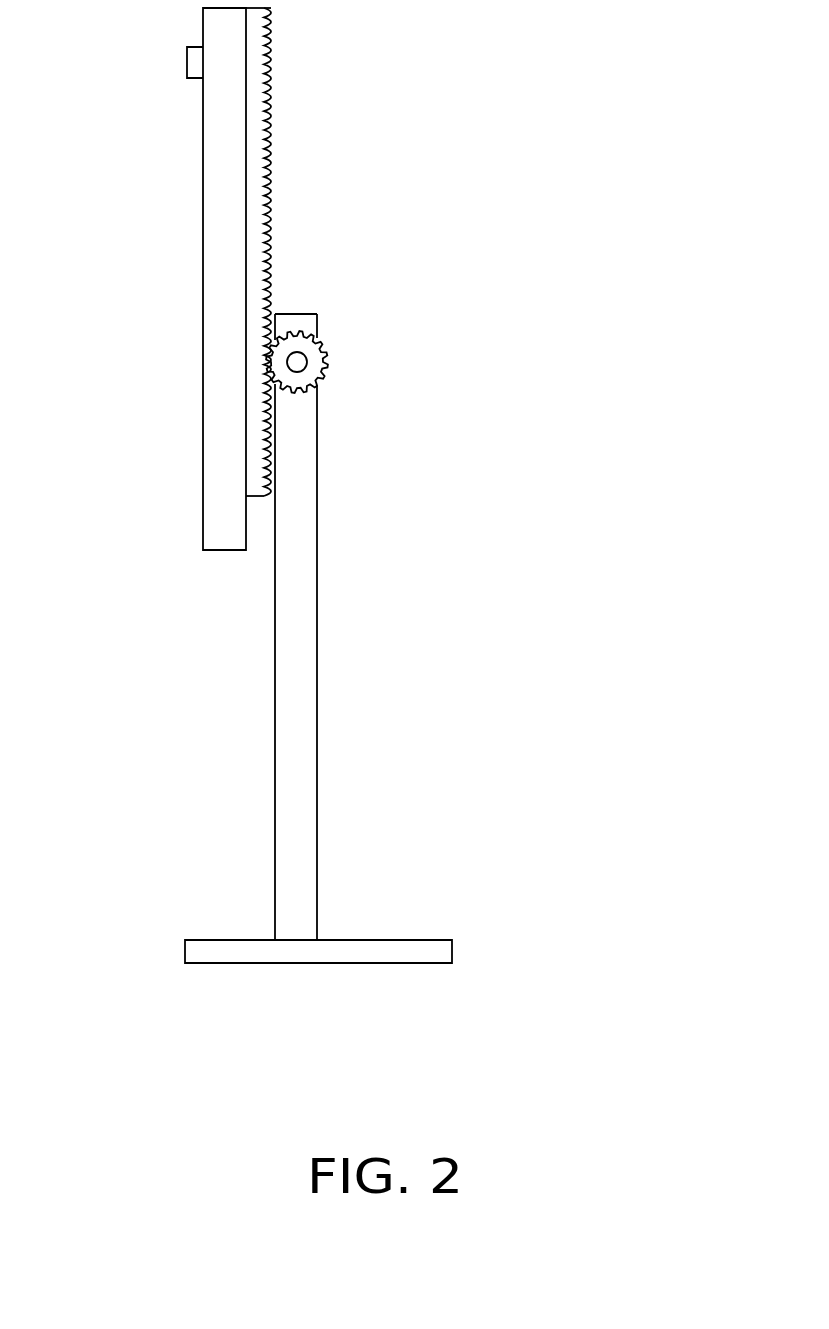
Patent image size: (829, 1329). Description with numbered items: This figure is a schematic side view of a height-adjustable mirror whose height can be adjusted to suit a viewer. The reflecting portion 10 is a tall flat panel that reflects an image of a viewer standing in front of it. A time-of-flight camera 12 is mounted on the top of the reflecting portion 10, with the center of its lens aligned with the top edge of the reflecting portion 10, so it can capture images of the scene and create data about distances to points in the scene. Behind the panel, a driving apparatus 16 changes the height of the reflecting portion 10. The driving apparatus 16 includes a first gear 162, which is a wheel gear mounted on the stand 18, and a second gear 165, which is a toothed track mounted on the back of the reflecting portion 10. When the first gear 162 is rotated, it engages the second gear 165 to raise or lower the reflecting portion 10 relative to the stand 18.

The reflecting portion 10 is at (232, 167).
The time-of-flight (TOF) camera 12 is at (192, 63).
The second gear 165 is at (271, 133).
The driving apparatus 16 is at (359, 343).
The first gear 162 is at (328, 340).
The stand 18 is at (290, 624).